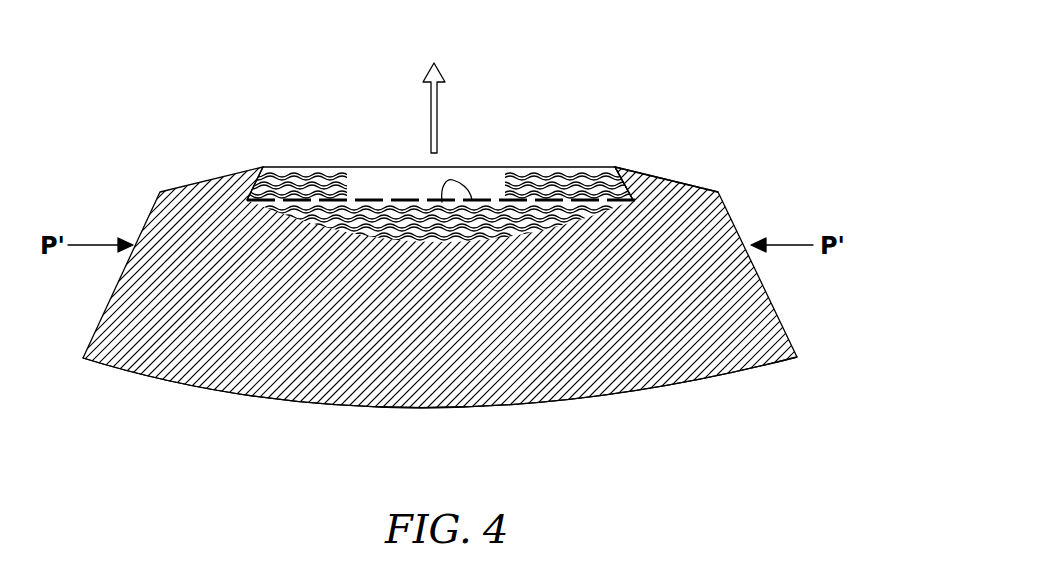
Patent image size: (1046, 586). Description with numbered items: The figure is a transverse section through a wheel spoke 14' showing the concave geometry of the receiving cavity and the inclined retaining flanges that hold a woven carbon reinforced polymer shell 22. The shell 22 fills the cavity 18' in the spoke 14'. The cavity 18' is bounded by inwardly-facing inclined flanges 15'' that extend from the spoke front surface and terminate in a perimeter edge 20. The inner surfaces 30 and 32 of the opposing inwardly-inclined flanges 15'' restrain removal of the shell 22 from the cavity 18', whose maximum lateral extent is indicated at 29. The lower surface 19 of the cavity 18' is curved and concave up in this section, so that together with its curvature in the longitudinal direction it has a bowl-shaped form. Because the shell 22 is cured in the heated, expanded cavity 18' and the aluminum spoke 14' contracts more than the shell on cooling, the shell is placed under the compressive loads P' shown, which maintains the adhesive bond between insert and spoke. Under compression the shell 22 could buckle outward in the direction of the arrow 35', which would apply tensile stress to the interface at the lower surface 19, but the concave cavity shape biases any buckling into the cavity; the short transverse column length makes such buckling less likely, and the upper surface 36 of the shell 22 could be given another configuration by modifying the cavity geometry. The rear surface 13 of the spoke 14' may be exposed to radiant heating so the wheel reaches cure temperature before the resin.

The rear surface 13 is at (698, 382).
The spoke 14' is at (523, 323).
The inwardly-facing inclined flange 15'' is at (666, 118).
The cavity 18' is at (581, 332).
The lower surface 19 is at (307, 220).
The perimeter edge 20 is at (263, 170).
The shell 22 is at (398, 228).
The maximum lateral extent 29 is at (247, 200).
The inner surface 30 is at (634, 188).
The inner surface 32 is at (248, 178).
The arrow 35' is at (453, 108).
The upper surface 36 is at (472, 202).